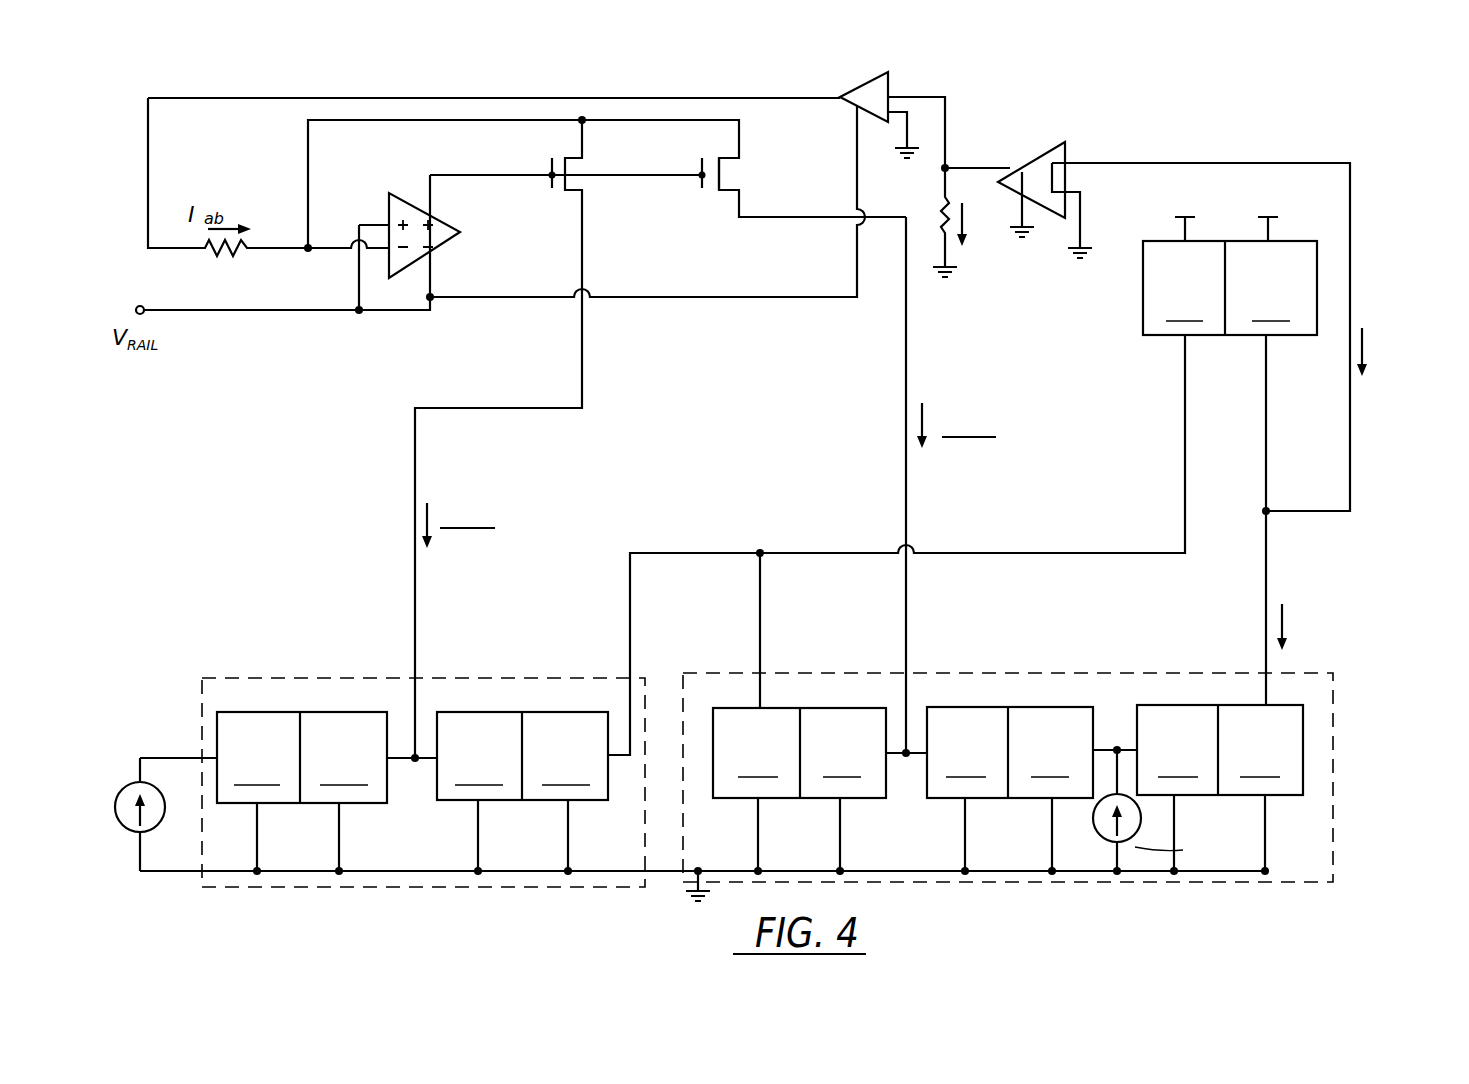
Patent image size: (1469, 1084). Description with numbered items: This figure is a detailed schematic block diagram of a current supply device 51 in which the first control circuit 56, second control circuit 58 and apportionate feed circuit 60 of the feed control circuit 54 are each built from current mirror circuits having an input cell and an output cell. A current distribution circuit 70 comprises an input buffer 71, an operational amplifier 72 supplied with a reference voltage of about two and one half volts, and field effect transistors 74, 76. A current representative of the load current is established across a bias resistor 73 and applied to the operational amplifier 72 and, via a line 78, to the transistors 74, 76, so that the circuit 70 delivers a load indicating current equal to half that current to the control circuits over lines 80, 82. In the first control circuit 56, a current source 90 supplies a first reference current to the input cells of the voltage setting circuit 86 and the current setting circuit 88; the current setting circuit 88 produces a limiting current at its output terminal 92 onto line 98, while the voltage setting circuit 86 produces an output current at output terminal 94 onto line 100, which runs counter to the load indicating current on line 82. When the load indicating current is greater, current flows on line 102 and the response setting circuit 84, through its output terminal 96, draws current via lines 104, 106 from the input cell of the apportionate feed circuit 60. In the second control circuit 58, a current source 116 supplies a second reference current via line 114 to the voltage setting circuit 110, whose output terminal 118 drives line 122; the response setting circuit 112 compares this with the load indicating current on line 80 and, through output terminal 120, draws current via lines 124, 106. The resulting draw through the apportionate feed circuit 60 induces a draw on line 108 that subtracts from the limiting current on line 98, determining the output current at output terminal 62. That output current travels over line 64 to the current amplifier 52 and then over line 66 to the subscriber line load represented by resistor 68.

The current supply device 51 is at (1212, 121).
The current amplifier 52 is at (1068, 152).
The feed control circuit 54 is at (1055, 386).
The first control circuit 56 is at (1222, 882).
The second control circuit 58 is at (440, 888).
The apportionate feed circuit 60 is at (1210, 240).
The output terminal 62 is at (1330, 512).
The line 64 is at (1275, 163).
The line 66 is at (947, 120).
The resistor 68 is at (947, 236).
The current distribution circuit 70 is at (582, 437).
The input buffer 71 is at (895, 85).
The operational amplifier 72 is at (460, 236).
The bias resistor 73 is at (205, 253).
The field effect transistor 74 is at (557, 192).
The field effect transistor 76 is at (718, 192).
The line 78 is at (308, 152).
The line 80 is at (415, 452).
The line 82 is at (910, 357).
The response setting circuit 84 is at (785, 708).
The voltage setting circuit 86 is at (1025, 707).
The current setting circuit 88 is at (1168, 705).
The current source 90 is at (1108, 841).
The output terminal 92 is at (1262, 703).
The output terminal 94 is at (912, 745).
The output terminal 96 is at (752, 708).
The line 98 is at (1264, 563).
The line 100 is at (917, 757).
The line 102 is at (893, 755).
The line 104 is at (763, 605).
The line 106 is at (1185, 372).
The line 108 is at (1268, 376).
The voltage setting circuit 110 is at (250, 712).
The response setting circuit 112 is at (475, 712).
The line 114 is at (162, 758).
The current source 116 is at (135, 782).
The output terminal 118 is at (398, 745).
The output terminal 120 is at (608, 765).
The line 122 is at (410, 757).
The line 124 is at (700, 523).